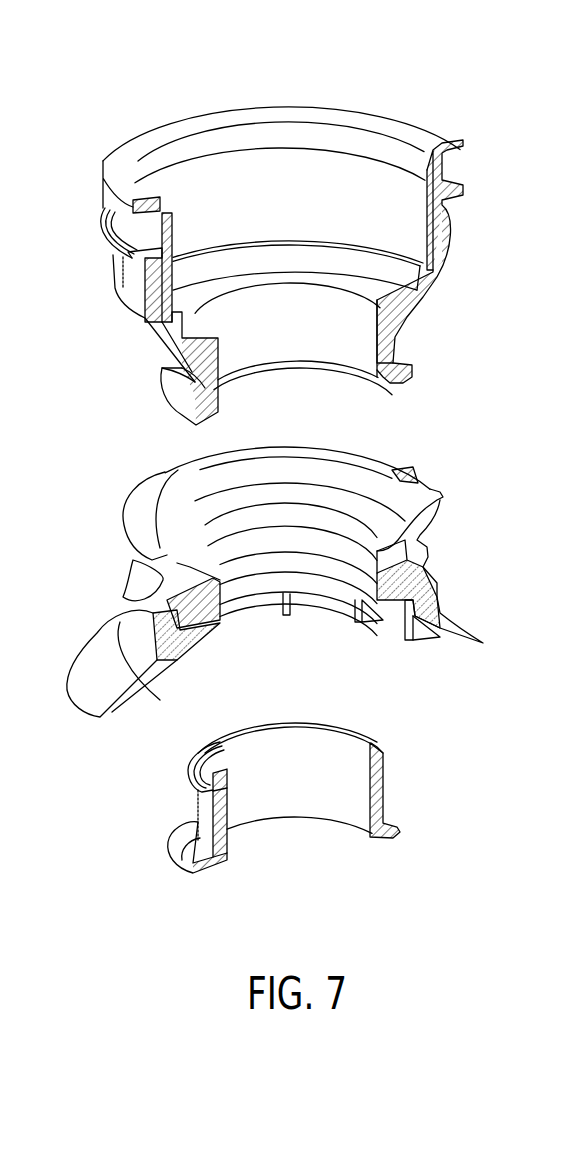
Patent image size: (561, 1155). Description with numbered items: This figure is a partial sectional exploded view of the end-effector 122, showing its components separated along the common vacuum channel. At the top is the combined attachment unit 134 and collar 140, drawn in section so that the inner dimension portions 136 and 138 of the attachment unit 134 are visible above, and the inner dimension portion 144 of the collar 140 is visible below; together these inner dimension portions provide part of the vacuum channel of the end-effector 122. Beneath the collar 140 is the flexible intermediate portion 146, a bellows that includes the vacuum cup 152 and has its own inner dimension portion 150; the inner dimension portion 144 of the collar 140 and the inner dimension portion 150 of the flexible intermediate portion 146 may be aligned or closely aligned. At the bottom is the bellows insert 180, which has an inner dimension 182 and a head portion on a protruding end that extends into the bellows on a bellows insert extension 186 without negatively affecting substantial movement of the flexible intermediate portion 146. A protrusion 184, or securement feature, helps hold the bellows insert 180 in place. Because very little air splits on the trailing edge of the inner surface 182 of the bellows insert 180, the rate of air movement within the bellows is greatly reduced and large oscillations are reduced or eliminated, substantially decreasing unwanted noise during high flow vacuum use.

The end-effector 122 is at (148, 77).
The inner dimension portion 136 is at (290, 135).
The inner dimension portion 138 is at (310, 208).
The inner dimension portion 144 is at (310, 342).
The attachment unit 134 is at (103, 217).
The collar 140 is at (137, 303).
The inner dimension portion 150 is at (290, 545).
The flexible intermediate portion 146 is at (140, 513).
The vacuum cup 152 is at (113, 647).
The inner dimension 182 is at (311, 787).
The protrusion 184 is at (198, 762).
The bellows insert extension 186 is at (377, 797).
The bellows insert 180 is at (217, 863).